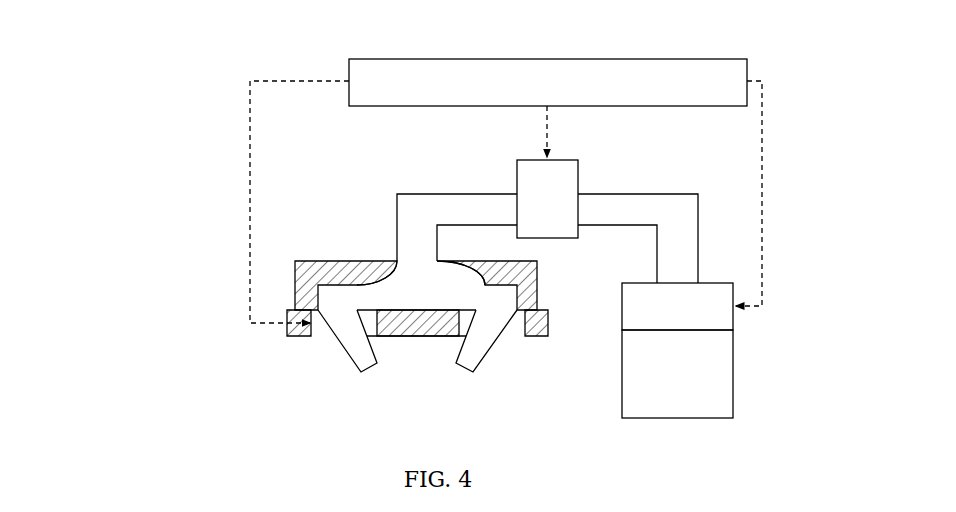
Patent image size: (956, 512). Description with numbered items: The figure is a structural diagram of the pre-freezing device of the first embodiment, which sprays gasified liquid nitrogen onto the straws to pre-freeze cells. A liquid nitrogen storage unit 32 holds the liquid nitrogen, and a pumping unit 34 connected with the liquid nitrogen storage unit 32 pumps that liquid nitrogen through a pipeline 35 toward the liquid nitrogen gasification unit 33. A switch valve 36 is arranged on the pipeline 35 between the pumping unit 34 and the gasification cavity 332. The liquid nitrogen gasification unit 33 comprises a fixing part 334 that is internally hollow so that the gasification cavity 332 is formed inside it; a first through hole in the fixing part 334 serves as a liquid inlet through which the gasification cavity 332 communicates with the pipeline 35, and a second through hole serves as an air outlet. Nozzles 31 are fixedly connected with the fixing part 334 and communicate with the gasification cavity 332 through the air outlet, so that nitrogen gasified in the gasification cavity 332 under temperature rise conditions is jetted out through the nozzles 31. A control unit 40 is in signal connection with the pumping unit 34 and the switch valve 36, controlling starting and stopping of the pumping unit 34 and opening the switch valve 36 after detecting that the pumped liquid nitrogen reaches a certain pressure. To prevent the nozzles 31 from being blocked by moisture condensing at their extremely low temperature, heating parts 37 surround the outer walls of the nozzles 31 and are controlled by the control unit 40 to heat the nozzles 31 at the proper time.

The control unit 40 is at (567, 61).
The switch valve 36 is at (579, 188).
The pumping unit 34 is at (622, 308).
The liquid nitrogen storage unit 32 is at (727, 385).
The pipeline 35 is at (443, 196).
The liquid nitrogen gasification unit 33 is at (303, 261).
The fixing part 334 is at (310, 272).
The gasification cavity 332 is at (397, 278).
The heating parts 37 is at (321, 327).
The nozzles 31 is at (357, 362).